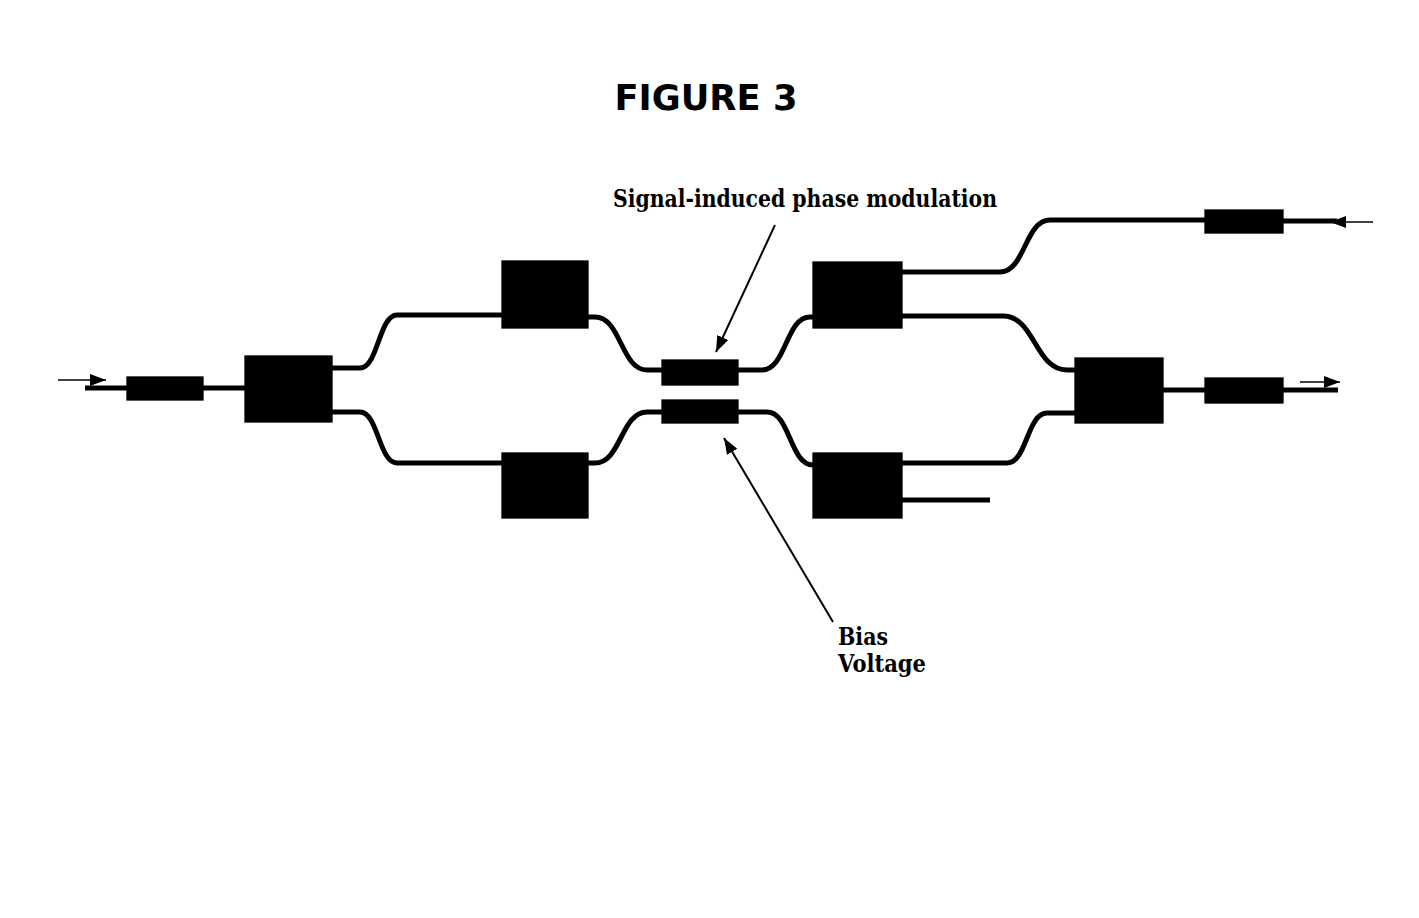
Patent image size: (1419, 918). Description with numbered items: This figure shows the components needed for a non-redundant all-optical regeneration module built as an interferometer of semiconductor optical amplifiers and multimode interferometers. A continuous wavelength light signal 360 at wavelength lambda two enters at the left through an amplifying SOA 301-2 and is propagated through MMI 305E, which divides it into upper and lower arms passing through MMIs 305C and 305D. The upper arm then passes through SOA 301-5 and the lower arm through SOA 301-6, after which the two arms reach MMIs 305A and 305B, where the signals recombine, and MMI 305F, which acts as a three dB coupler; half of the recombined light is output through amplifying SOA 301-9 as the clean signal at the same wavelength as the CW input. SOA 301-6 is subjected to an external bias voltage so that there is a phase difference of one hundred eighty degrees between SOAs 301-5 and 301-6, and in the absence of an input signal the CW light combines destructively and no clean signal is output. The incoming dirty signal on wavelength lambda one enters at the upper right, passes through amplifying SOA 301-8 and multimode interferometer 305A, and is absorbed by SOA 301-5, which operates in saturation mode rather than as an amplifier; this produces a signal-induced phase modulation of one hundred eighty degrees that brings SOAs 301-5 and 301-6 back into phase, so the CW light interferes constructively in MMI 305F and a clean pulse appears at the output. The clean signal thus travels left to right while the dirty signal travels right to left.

The continuous wavelength light signal 360 is at (100, 400).
The SOA 301-2 is at (180, 403).
The MMI 305E is at (277, 357).
The MMI 305C is at (540, 262).
The MMI 305D is at (550, 518).
The SOA 301-5 is at (690, 360).
The SOA 301-6 is at (697, 424).
The multimode interferometer 305A is at (870, 328).
The MMI 305B is at (838, 452).
The MMI 305F is at (1122, 423).
The amplifying SOA 301-8 is at (1230, 233).
The amplifying SOA 301-9 is at (1228, 403).